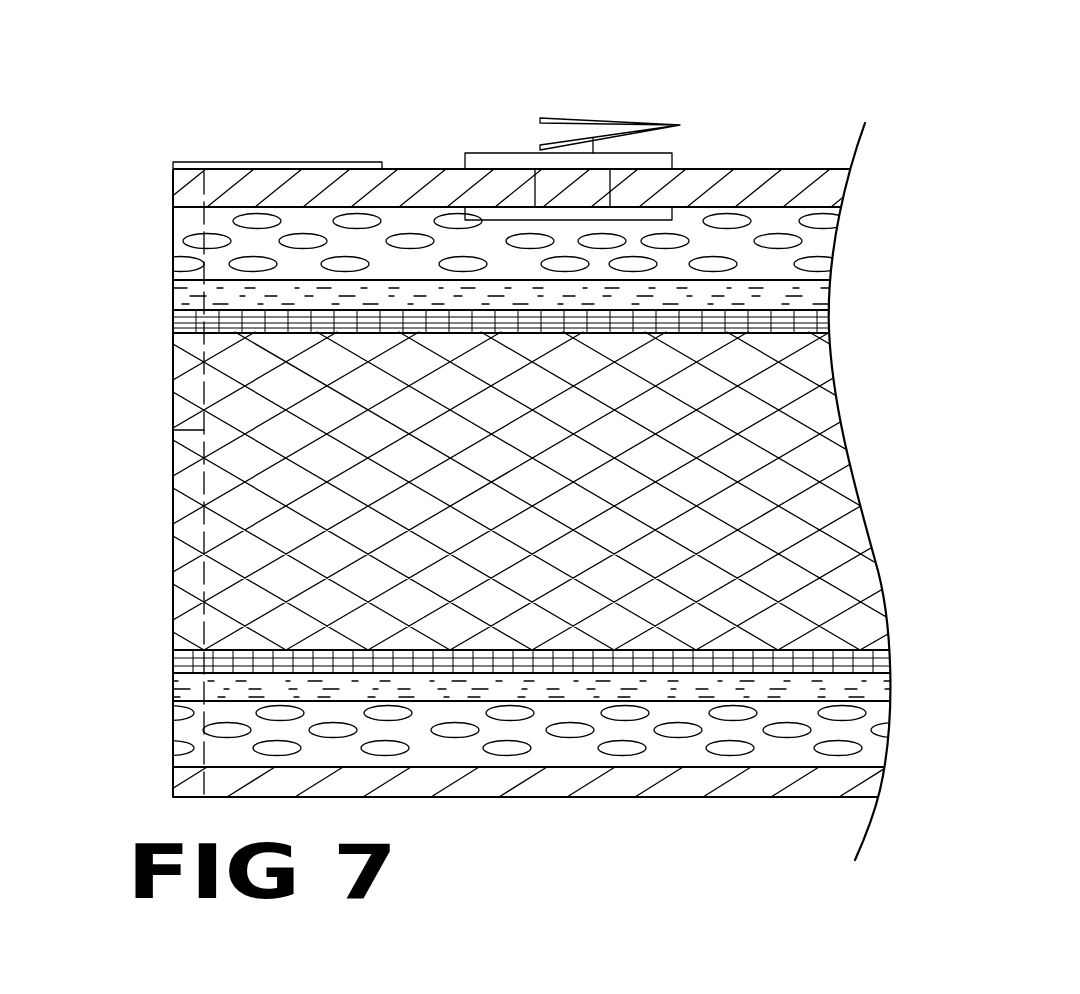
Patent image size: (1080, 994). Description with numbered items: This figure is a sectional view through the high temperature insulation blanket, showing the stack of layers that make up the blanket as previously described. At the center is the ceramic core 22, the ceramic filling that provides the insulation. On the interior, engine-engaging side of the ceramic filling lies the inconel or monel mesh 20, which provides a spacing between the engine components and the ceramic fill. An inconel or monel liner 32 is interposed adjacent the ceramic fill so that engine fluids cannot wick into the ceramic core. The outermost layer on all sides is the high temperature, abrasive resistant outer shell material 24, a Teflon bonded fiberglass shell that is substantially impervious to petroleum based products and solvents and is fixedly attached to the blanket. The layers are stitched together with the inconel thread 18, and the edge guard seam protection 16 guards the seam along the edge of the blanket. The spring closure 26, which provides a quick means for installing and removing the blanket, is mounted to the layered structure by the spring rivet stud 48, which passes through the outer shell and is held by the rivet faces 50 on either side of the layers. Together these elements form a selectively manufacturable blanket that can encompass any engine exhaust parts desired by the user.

The edge guard seam protection 16 is at (312, 162).
The inconel thread 18 is at (203, 430).
The inconel or monel mesh 20 is at (833, 318).
The ceramic core 22 is at (822, 238).
The outer shell material 24 is at (753, 167).
The spring closure 26 is at (590, 117).
The inconel or monel liner 32 is at (830, 292).
The spring rivet stud 48 is at (613, 200).
The rivet faces 50 is at (502, 150).